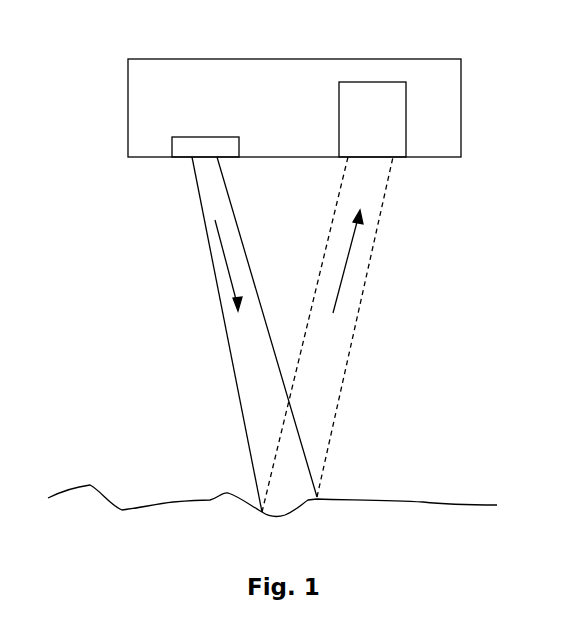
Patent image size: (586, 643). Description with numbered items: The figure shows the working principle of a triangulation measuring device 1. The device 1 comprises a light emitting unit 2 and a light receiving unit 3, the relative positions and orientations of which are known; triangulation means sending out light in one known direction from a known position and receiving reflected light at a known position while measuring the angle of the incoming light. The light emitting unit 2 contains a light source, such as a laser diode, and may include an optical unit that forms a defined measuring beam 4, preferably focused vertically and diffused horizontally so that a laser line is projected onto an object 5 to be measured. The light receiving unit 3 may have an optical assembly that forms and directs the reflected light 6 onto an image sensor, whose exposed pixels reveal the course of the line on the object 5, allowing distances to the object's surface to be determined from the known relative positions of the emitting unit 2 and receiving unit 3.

The measuring device 1 is at (268, 96).
The light emitting unit 2 is at (157, 127).
The light receiving unit 3 is at (395, 123).
The measuring beam 4 is at (217, 334).
The object 5 is at (272, 483).
The reflected light 6 is at (362, 334).